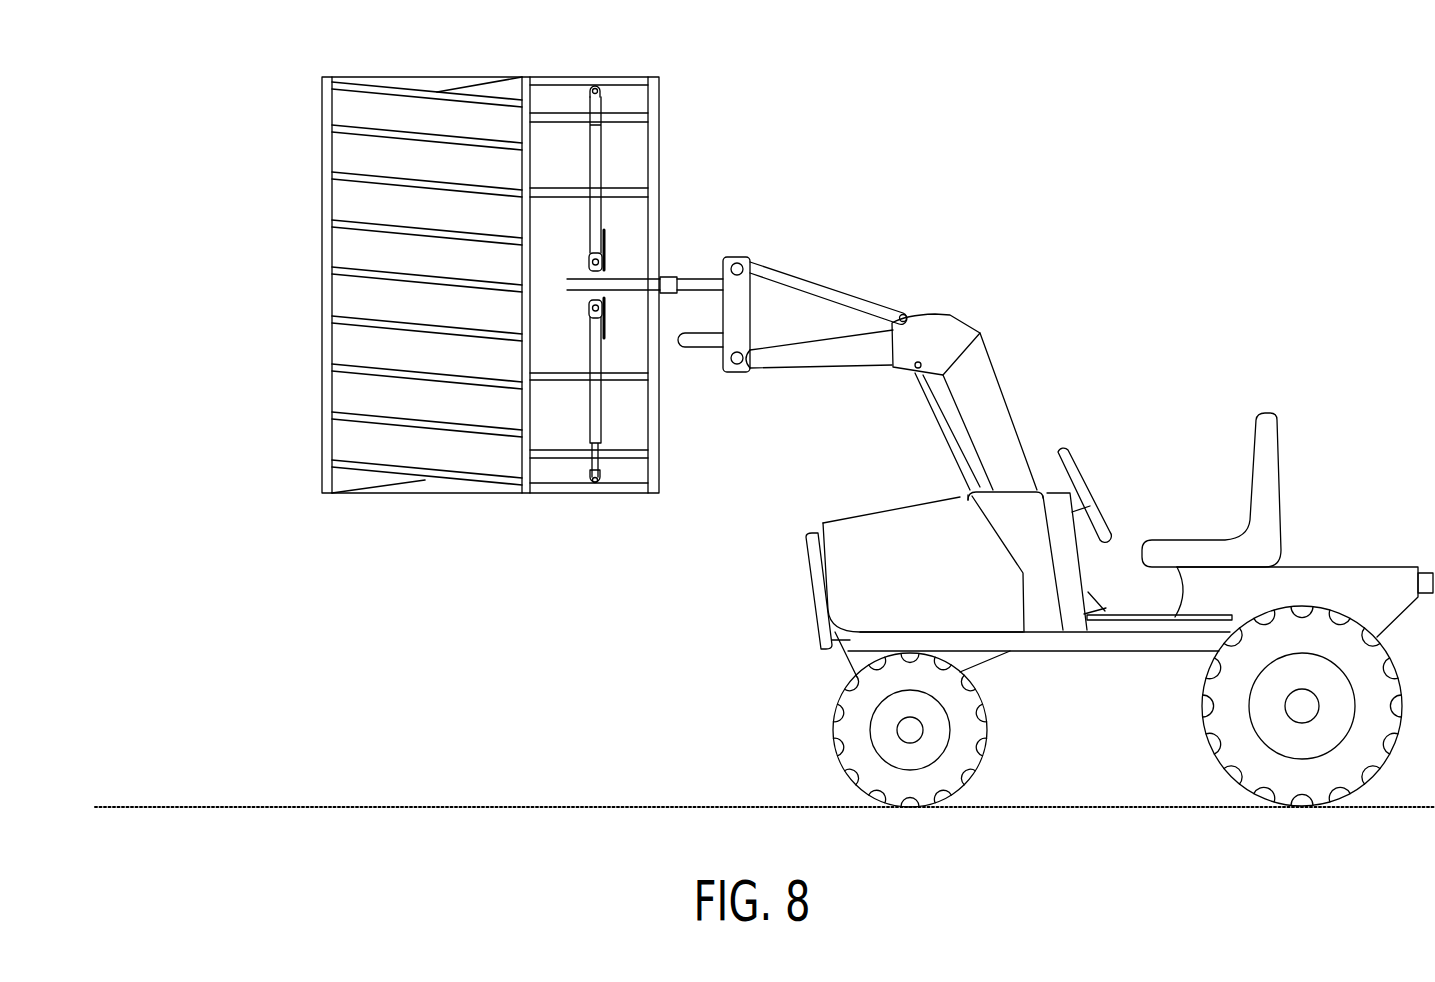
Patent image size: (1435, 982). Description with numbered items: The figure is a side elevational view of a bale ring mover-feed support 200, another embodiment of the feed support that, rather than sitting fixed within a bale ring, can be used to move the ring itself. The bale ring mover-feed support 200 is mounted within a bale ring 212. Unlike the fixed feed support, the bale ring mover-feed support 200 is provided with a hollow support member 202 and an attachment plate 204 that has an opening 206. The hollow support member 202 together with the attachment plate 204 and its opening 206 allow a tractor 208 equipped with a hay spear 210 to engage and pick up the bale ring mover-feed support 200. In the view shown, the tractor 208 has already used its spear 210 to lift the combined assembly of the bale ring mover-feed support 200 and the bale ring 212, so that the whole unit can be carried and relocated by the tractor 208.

The bale ring mover-feed support 200 is at (606, 212).
The hollow support member 202 is at (672, 278).
The attachment plate 204 is at (602, 245).
The opening 206 is at (600, 270).
The tractor 208 is at (868, 513).
The hay spear 210 is at (690, 286).
The bale ring 212 is at (392, 88).